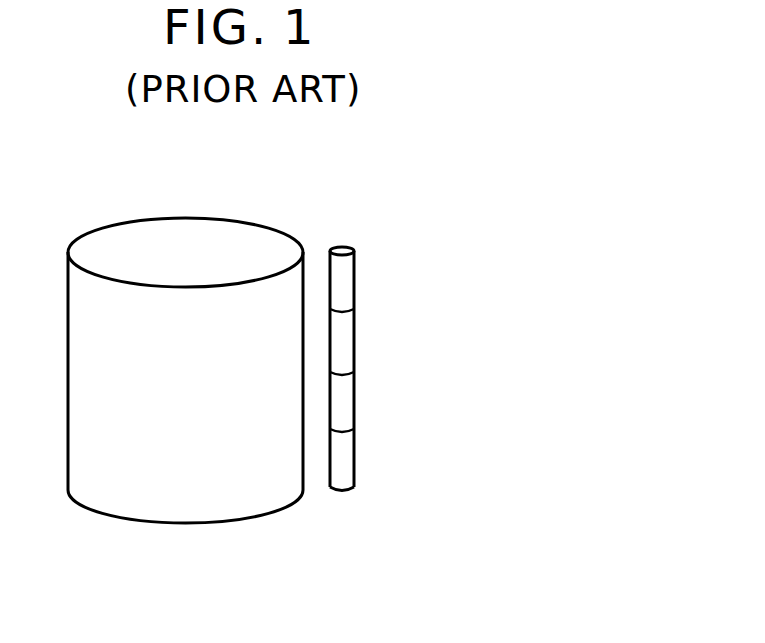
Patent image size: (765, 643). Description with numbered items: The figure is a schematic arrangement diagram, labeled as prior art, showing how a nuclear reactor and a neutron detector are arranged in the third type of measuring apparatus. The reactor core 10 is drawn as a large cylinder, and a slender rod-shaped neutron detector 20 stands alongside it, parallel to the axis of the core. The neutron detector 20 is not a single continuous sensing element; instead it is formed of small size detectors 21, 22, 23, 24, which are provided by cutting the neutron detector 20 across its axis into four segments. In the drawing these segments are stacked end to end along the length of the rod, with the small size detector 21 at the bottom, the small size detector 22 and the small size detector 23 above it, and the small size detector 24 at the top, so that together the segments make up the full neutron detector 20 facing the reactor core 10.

The reactor core 10 is at (237, 219).
The neutron detector 20 is at (387, 335).
The small size detector 21 is at (354, 468).
The small size detector 22 is at (354, 402).
The small size detector 23 is at (354, 341).
The small size detector 24 is at (354, 284).